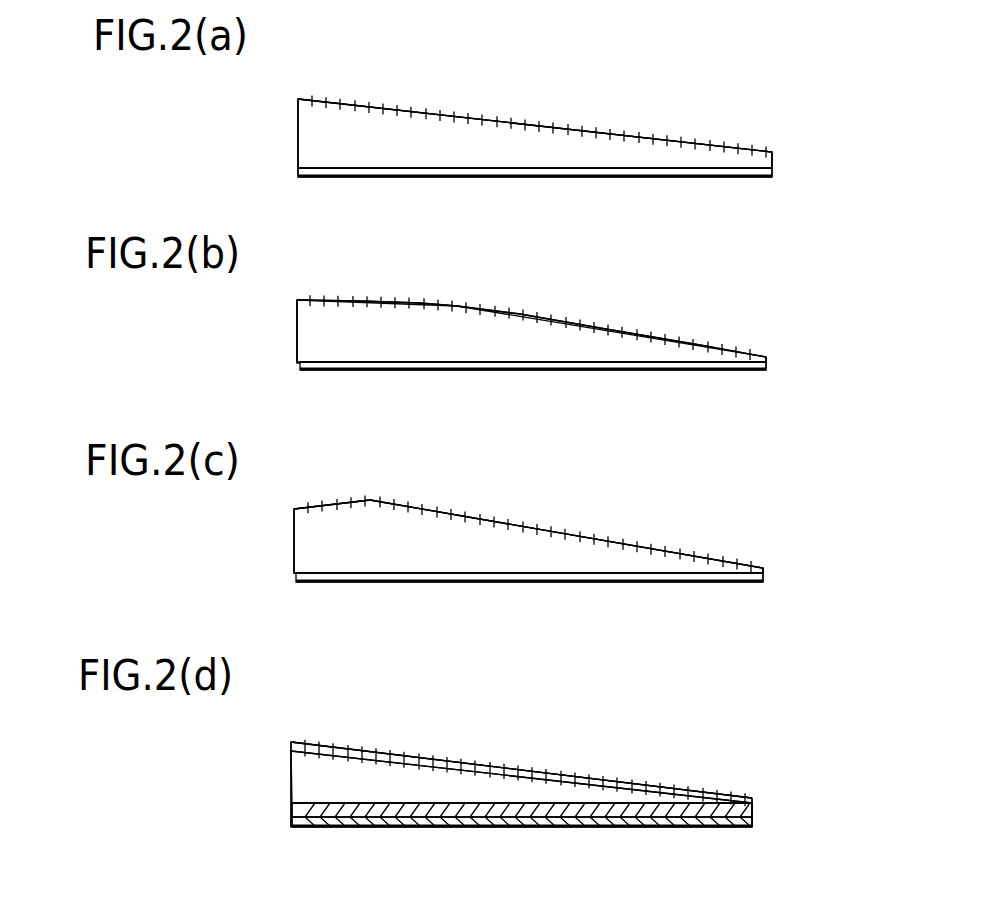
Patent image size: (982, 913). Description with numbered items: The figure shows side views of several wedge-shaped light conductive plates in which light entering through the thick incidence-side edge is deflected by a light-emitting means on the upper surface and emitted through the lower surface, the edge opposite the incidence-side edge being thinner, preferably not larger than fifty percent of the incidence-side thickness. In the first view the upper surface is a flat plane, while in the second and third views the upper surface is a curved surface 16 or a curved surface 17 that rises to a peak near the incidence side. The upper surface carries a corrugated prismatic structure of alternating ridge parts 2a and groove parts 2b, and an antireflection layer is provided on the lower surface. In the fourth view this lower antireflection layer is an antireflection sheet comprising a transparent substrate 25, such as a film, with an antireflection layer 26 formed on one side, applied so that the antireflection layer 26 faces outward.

The ridge part 2a is at (586, 777).
The groove part 2b is at (812, 783).
The upper surface 16 is at (457, 305).
The upper surface 17 is at (370, 499).
The transparent substrate 25 is at (755, 805).
The antireflection layer 26 is at (755, 824).